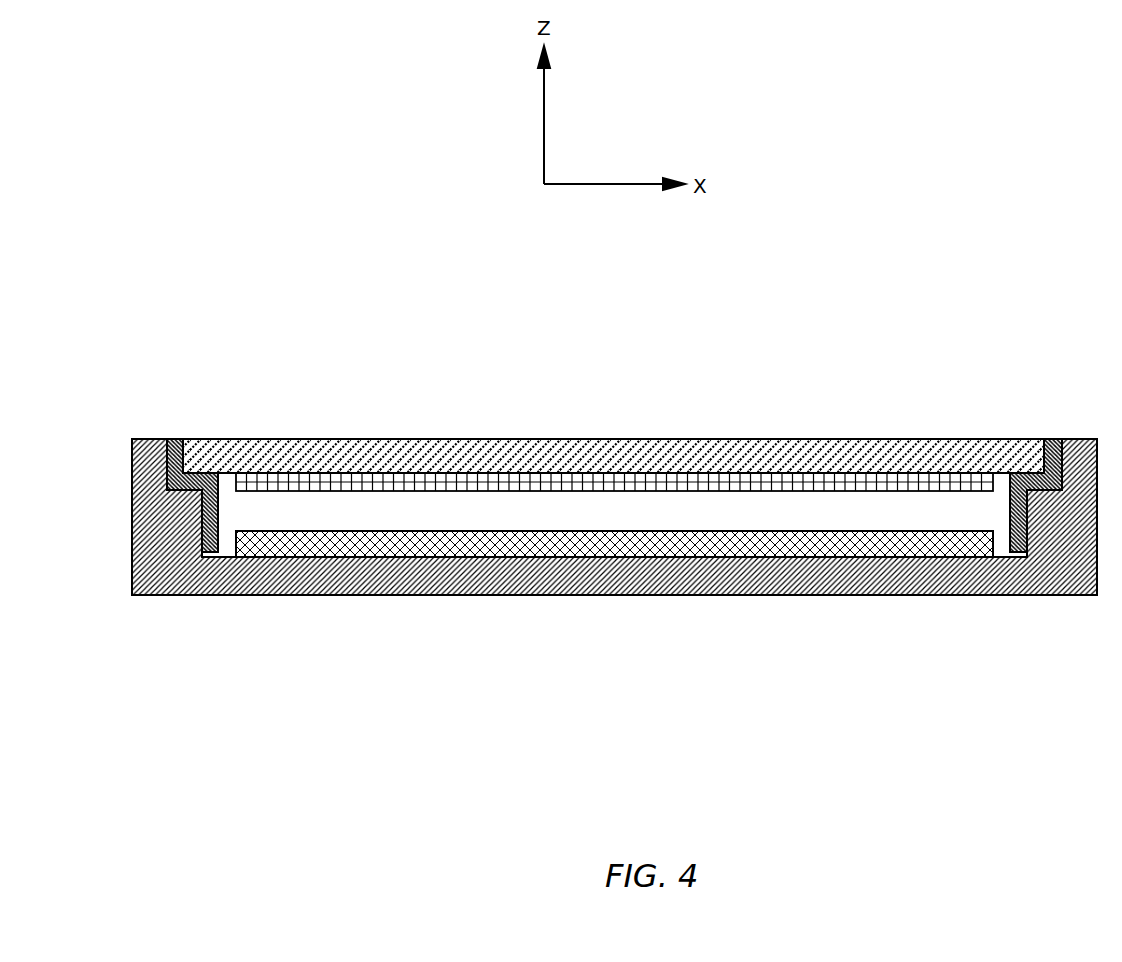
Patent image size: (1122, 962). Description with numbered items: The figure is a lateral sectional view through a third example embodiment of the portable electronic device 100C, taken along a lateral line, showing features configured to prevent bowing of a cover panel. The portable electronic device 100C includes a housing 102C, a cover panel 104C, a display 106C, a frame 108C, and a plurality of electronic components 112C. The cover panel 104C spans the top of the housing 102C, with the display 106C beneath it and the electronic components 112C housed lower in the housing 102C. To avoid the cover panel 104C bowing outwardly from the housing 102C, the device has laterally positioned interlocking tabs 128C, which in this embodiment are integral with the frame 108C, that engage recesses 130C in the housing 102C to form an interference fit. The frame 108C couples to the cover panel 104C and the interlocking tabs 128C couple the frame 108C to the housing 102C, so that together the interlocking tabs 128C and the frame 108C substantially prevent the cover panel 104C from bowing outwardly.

The portable electronic device 100C is at (193, 320).
The housing 102C is at (132, 492).
The cover panel 104C is at (547, 438).
The display 106C is at (803, 490).
The frame 108C is at (177, 440).
The electronic components 112C is at (408, 531).
The interlocking tabs 128C is at (193, 535).
The recesses 130C is at (187, 535).